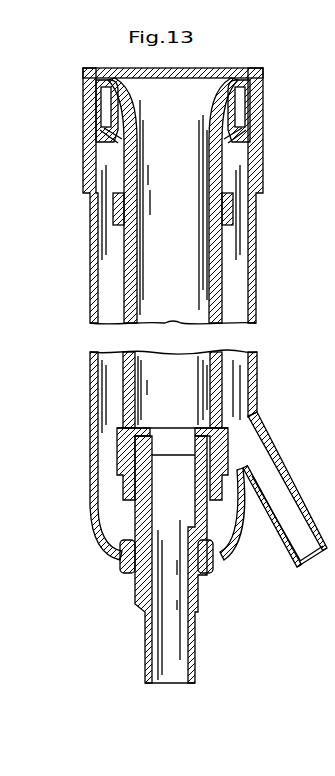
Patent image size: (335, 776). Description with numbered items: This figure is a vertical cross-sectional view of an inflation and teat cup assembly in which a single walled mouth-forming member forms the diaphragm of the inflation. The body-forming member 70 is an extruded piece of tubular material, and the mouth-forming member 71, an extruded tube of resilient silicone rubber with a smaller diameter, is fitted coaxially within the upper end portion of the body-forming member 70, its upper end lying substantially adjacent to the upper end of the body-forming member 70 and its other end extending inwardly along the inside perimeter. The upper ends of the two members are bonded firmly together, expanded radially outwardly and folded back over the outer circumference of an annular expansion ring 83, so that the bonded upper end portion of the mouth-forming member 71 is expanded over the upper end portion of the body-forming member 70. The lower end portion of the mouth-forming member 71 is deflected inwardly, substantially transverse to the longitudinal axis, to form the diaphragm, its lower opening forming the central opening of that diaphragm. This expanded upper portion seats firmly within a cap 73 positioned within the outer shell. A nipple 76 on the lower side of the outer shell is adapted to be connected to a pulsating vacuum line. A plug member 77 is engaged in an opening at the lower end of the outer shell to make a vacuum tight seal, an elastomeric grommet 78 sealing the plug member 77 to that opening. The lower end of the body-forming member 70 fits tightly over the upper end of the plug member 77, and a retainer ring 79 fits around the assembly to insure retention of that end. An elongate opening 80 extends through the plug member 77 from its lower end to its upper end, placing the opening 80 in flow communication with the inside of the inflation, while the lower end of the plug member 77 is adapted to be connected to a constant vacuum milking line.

The body-forming member 70 is at (122, 239).
The mouth-forming member 71 is at (137, 76).
The cap 73 is at (84, 129).
The nipple 76 is at (290, 483).
The plug member 77 is at (200, 438).
The grommet 78 is at (216, 574).
The retainer ring 79 is at (228, 456).
The elongate opening 80 is at (177, 672).
The expansion ring 83 is at (108, 104).